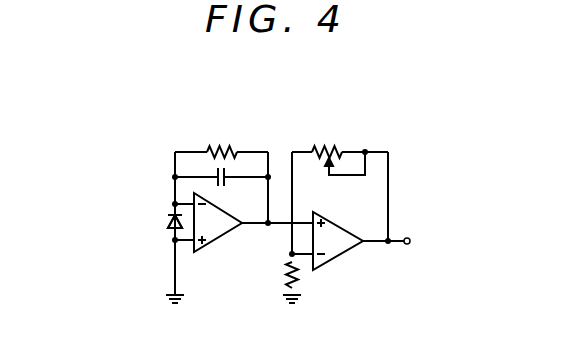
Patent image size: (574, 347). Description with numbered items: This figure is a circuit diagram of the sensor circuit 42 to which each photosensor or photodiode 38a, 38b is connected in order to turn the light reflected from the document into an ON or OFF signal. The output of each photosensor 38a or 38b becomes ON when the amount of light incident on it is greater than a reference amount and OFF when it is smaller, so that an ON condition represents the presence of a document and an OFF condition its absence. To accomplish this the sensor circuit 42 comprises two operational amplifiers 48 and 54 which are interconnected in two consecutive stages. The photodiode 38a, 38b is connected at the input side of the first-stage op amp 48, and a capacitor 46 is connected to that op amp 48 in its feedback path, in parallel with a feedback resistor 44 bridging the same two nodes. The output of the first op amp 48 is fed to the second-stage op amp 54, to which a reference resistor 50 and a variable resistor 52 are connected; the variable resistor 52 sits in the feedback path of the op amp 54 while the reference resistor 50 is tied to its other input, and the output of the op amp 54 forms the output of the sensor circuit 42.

The sensor circuit 42 is at (421, 188).
The feedback resistor 44 is at (222, 150).
The capacitor 46 is at (226, 171).
The operational amplifier 48 is at (227, 239).
The photosensor 38a is at (168, 222).
The photosensor 38b is at (168, 222).
The variable resistor 52 is at (334, 150).
The reference resistor 50 is at (298, 278).
The operational amplifier 54 is at (343, 255).